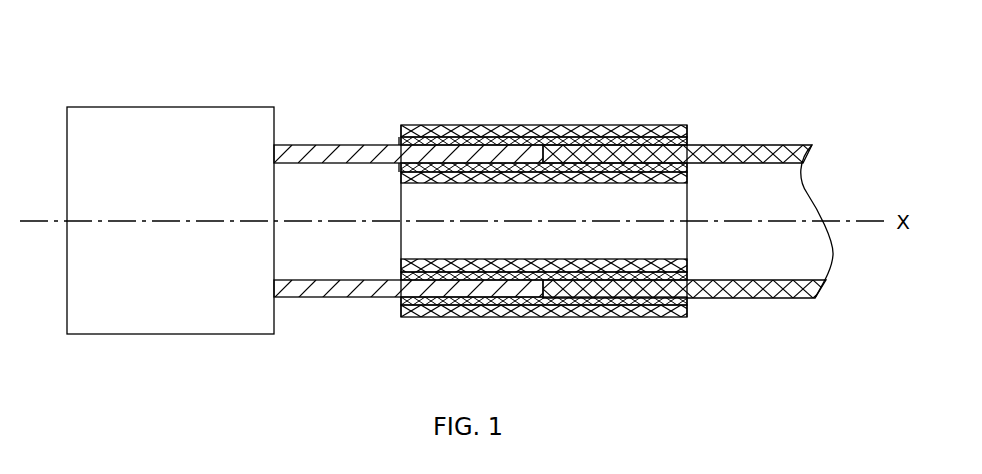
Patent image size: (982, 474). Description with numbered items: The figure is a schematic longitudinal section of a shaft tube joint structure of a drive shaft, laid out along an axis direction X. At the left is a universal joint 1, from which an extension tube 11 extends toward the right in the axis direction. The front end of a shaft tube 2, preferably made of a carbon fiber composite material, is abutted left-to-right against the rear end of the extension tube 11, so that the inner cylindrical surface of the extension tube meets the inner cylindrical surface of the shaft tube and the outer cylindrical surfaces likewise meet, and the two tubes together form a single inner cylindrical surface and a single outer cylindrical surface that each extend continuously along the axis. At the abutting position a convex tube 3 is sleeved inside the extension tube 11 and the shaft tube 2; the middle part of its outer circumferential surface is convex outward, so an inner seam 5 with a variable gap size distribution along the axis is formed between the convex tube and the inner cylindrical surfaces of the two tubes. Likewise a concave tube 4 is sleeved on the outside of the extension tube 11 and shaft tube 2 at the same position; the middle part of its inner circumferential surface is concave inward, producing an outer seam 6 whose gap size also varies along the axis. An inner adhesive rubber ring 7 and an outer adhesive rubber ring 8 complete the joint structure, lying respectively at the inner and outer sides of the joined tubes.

The universal joint 1 is at (151, 120).
The extension tube 11 is at (315, 147).
The shaft tube 2 is at (776, 145).
The convex tube 3 is at (687, 182).
The concave tube 4 is at (687, 131).
The inner seam 5 is at (390, 174).
The outer seam 6 is at (390, 136).
The inner adhesive rubber ring 7 is at (687, 169).
The outer adhesive rubber ring 8 is at (690, 140).